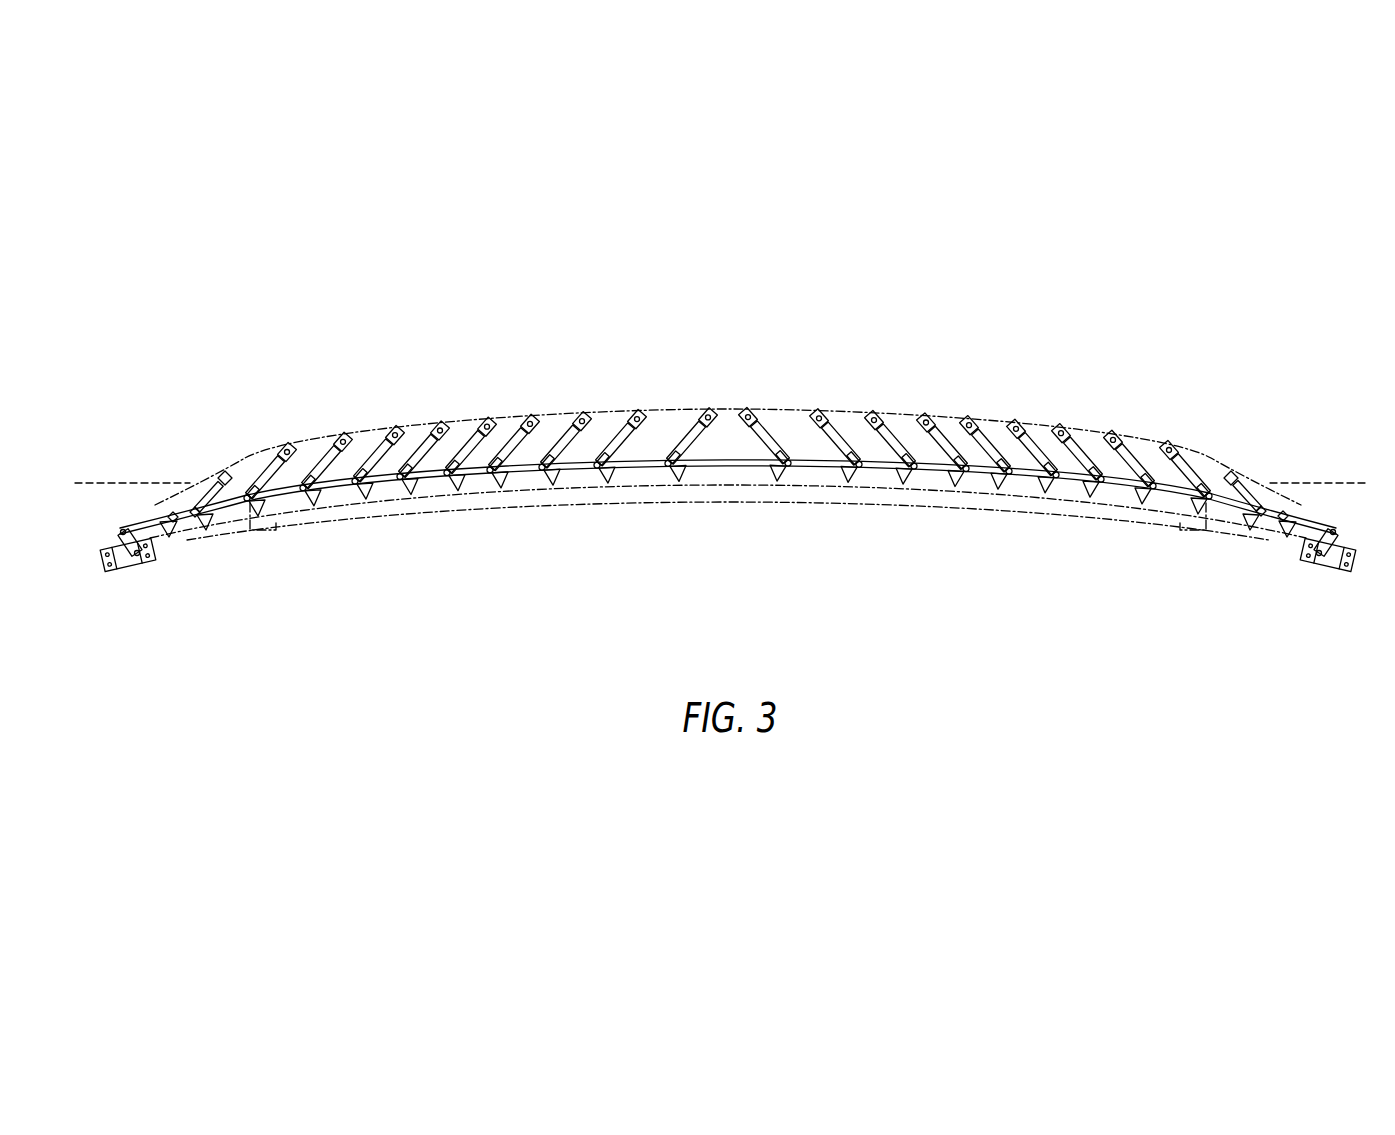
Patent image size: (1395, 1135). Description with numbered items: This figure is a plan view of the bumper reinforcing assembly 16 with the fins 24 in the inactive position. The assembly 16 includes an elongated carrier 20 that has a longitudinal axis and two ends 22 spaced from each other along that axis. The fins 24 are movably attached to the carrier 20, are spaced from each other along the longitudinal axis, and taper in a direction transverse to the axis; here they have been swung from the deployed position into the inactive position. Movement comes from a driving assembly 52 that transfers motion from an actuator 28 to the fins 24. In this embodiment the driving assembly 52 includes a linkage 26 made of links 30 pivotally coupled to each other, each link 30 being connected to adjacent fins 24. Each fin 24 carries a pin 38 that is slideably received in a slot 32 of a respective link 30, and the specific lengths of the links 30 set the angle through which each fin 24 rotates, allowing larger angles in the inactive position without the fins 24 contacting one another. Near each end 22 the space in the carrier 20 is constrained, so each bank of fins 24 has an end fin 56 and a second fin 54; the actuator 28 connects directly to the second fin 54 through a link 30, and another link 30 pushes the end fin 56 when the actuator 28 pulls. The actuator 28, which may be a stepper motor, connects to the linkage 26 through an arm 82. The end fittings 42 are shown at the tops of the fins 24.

The bumper reinforcing assembly 16 is at (232, 329).
The carrier 20 is at (237, 462).
The ends 22 is at (210, 470).
The fins 24 is at (266, 471).
The linkage 26 is at (514, 472).
The actuator 28 is at (102, 560).
The links 30 is at (170, 539).
The slot 32 is at (353, 478).
The pin 38 is at (254, 489).
The clamp 42 is at (287, 448).
The driving assembly 52 is at (164, 547).
The second fin 54 is at (220, 472).
The end fin 56 is at (171, 512).
The arm 82 is at (138, 562).